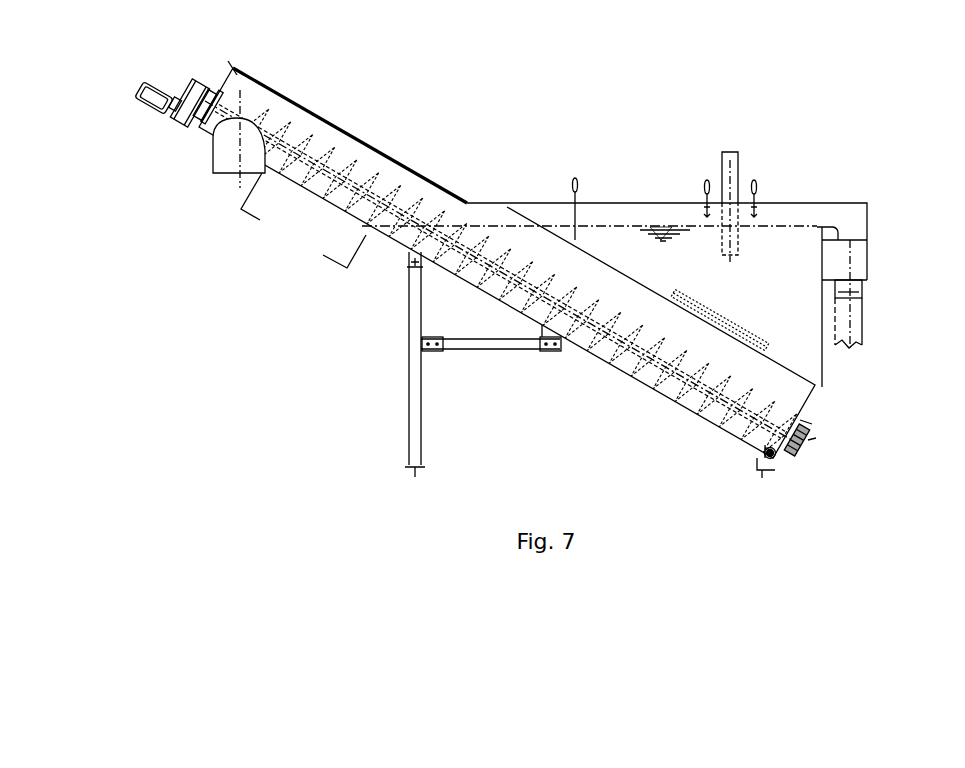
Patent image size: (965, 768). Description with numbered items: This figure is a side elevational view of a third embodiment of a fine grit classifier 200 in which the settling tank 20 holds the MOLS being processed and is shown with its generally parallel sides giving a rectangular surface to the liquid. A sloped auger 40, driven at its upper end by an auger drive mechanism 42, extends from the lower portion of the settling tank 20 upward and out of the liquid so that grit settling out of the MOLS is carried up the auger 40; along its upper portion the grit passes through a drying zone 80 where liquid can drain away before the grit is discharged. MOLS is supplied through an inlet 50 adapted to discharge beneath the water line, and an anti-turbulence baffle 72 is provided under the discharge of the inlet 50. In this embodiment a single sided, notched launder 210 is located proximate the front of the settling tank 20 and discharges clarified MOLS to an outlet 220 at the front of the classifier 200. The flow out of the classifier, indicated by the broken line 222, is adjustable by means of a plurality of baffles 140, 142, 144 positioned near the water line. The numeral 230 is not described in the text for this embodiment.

The settling tank 20 is at (800, 360).
The sloped auger 40 is at (398, 187).
The auger drive mechanism 42 is at (195, 82).
The inlet 50 is at (740, 152).
The anti-turbulence baffle 72 is at (770, 333).
The drying zone 80 is at (289, 179).
The baffle 140 is at (577, 177).
The baffle 142 is at (705, 192).
The baffle 144 is at (755, 188).
The fine grit classifier 200 is at (252, 274).
The single sided, notched launder 210 is at (817, 227).
The outlet 220 is at (865, 290).
The broken line 222 is at (782, 223).
The inclined trough 230 is at (683, 268).